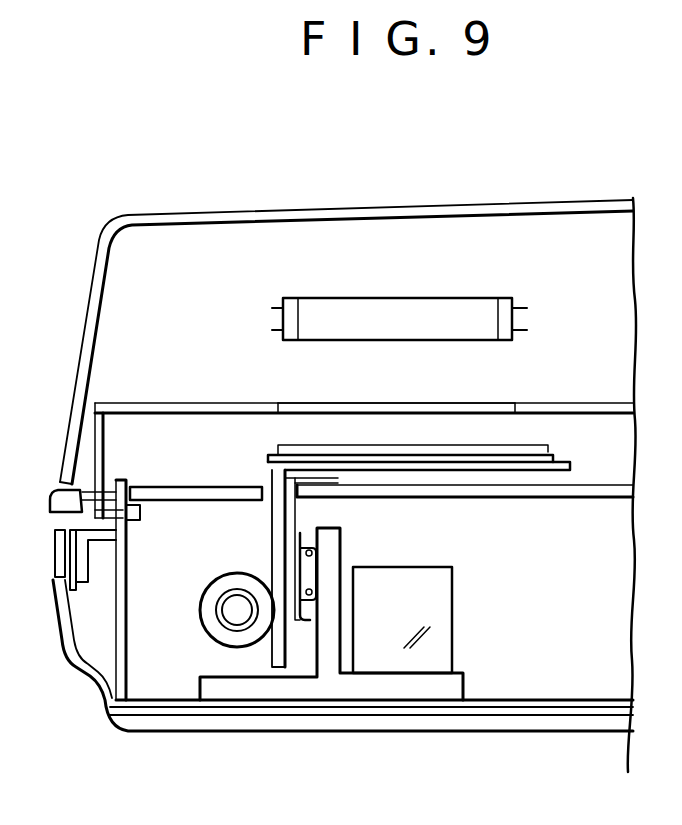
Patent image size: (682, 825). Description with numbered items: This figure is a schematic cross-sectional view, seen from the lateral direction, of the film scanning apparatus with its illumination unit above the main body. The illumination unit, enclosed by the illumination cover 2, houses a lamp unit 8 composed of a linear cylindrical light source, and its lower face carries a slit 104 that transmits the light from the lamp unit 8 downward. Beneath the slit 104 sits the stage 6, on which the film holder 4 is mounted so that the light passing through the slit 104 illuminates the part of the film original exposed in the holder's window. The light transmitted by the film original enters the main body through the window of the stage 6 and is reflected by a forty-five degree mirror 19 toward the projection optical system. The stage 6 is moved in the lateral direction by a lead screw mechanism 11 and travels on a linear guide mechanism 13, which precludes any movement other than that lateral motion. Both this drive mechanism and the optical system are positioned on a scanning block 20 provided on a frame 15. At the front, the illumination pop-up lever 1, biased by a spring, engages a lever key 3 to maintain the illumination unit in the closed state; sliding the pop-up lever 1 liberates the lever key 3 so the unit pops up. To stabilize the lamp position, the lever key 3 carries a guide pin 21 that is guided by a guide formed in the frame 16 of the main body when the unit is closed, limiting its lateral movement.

The illumination pop-up lever 1 is at (55, 560).
The illumination cover 2 is at (213, 222).
The lever key 3 is at (98, 458).
The film holder 4 is at (548, 447).
The stage 6 is at (570, 467).
The lamp unit 8 is at (390, 313).
The lead screw mechanism 11 is at (213, 627).
The linear guide mechanism 13 is at (297, 605).
The frame 15 is at (165, 707).
The frame of the main body 16 is at (122, 658).
The 45° mirror 19 is at (438, 603).
The scanning block 20 is at (433, 693).
The guide pin 21 is at (140, 512).
The slit 104 is at (510, 403).